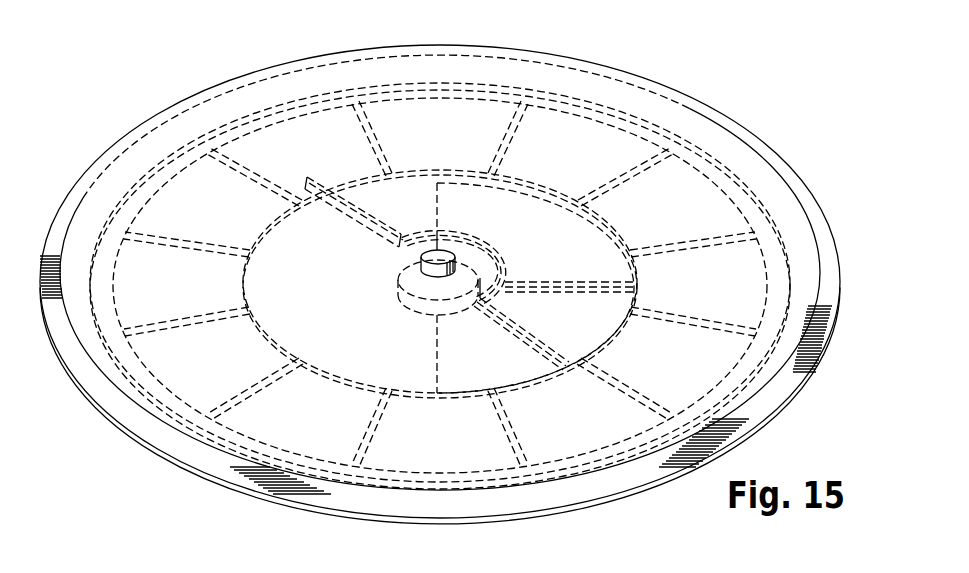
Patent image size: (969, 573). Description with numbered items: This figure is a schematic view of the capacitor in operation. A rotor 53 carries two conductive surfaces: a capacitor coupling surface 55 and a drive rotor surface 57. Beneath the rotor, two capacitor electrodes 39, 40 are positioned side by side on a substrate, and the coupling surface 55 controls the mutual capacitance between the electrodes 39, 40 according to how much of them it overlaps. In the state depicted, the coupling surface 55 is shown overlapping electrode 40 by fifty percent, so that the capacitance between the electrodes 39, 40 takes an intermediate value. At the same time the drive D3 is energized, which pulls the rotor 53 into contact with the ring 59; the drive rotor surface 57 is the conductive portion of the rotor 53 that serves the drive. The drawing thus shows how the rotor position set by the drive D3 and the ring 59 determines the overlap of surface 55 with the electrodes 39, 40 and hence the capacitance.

The rotor 53 is at (287, 58).
The ring 59 is at (826, 303).
The drive D3 is at (740, 292).
The conductive drive rotor surface 57 is at (350, 306).
The conductive capacitor coupling surface 55 is at (381, 210).
The capacitor electrode 39 is at (545, 241).
The capacitor electrode 40 is at (457, 366).